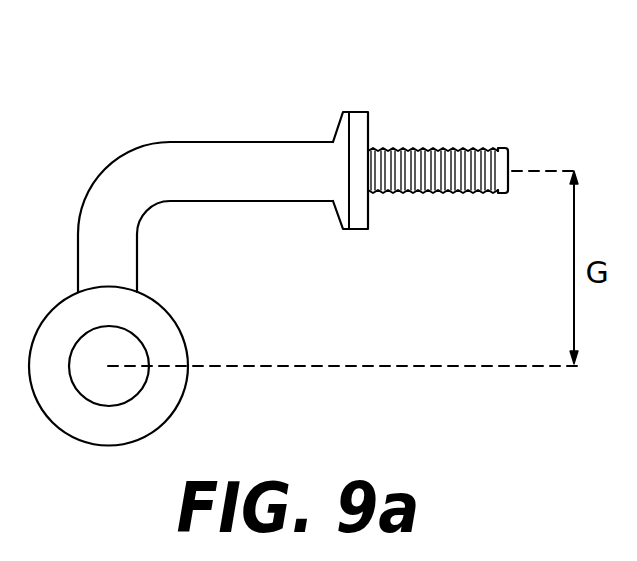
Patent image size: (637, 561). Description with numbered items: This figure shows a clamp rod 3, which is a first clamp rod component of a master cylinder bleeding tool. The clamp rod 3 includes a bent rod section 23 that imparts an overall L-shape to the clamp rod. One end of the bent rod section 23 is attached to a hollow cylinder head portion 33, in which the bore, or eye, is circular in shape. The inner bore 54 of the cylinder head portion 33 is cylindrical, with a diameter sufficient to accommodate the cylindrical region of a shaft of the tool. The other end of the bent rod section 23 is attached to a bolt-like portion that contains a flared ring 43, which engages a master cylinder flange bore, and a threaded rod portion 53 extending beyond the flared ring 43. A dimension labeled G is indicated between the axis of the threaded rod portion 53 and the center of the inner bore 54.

The clamp rod 3 is at (222, 94).
The bent rod section 23 is at (118, 158).
The hollow cylinder head portion 33 is at (176, 316).
The flared ring 43 is at (368, 125).
The threaded rod portion 53 is at (496, 149).
The inner bore 54 is at (150, 386).